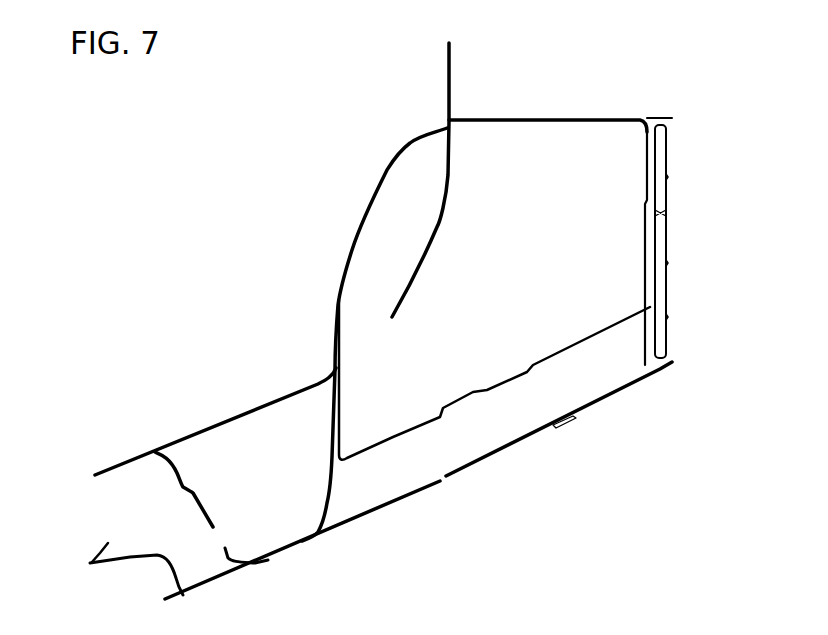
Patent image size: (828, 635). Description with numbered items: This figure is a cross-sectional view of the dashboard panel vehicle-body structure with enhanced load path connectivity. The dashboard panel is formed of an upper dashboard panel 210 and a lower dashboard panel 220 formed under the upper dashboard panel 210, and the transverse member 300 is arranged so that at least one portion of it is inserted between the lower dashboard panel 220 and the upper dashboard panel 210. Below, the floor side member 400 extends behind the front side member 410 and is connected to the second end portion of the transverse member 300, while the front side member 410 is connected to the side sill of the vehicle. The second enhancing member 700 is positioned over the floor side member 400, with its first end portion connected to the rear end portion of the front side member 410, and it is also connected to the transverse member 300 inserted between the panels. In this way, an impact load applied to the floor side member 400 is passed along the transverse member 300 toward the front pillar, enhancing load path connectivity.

The upper dashboard panel 210 is at (449, 170).
The lower dashboard panel 220 is at (253, 412).
The transverse member 300 is at (377, 193).
The floor side member 400 is at (400, 503).
The front side member 410 is at (200, 510).
The second enhancing member 700 is at (550, 357).